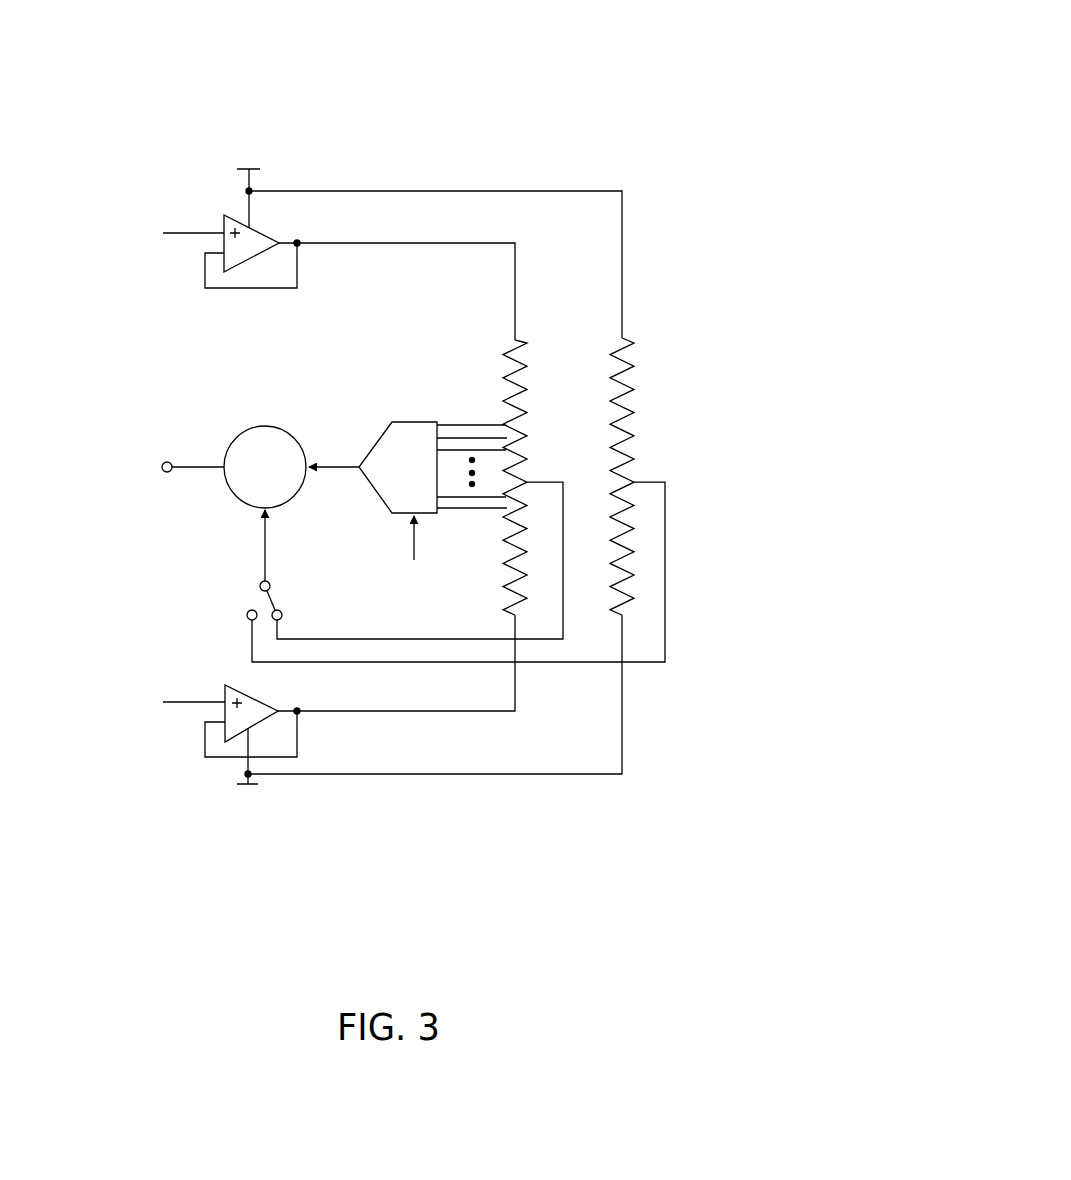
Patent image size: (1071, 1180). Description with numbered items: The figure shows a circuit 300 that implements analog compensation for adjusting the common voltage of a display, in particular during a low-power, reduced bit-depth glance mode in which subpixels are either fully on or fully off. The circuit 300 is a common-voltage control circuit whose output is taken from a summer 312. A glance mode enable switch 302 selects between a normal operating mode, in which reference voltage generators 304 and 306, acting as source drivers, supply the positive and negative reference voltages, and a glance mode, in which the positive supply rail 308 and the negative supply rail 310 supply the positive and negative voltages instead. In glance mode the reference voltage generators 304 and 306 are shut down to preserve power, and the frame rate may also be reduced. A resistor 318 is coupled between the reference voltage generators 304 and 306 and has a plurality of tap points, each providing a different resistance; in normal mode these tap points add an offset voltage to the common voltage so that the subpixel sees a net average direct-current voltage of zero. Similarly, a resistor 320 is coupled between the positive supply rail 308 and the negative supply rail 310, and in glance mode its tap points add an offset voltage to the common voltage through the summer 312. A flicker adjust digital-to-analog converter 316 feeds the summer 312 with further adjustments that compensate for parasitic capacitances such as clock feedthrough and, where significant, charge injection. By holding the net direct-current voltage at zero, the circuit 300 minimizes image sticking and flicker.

The circuit 300 is at (673, 75).
The glance mode enable switch 302 is at (252, 597).
The reference voltage generator 304 is at (178, 257).
The reference voltage generator 306 is at (190, 715).
The positive supply rail 308 is at (237, 130).
The negative supply rail 310 is at (248, 817).
The summer 312 is at (277, 420).
The flicker adjust digital-to-analog converter 316 is at (403, 405).
The resistor 318 is at (503, 368).
The resistor 320 is at (653, 355).